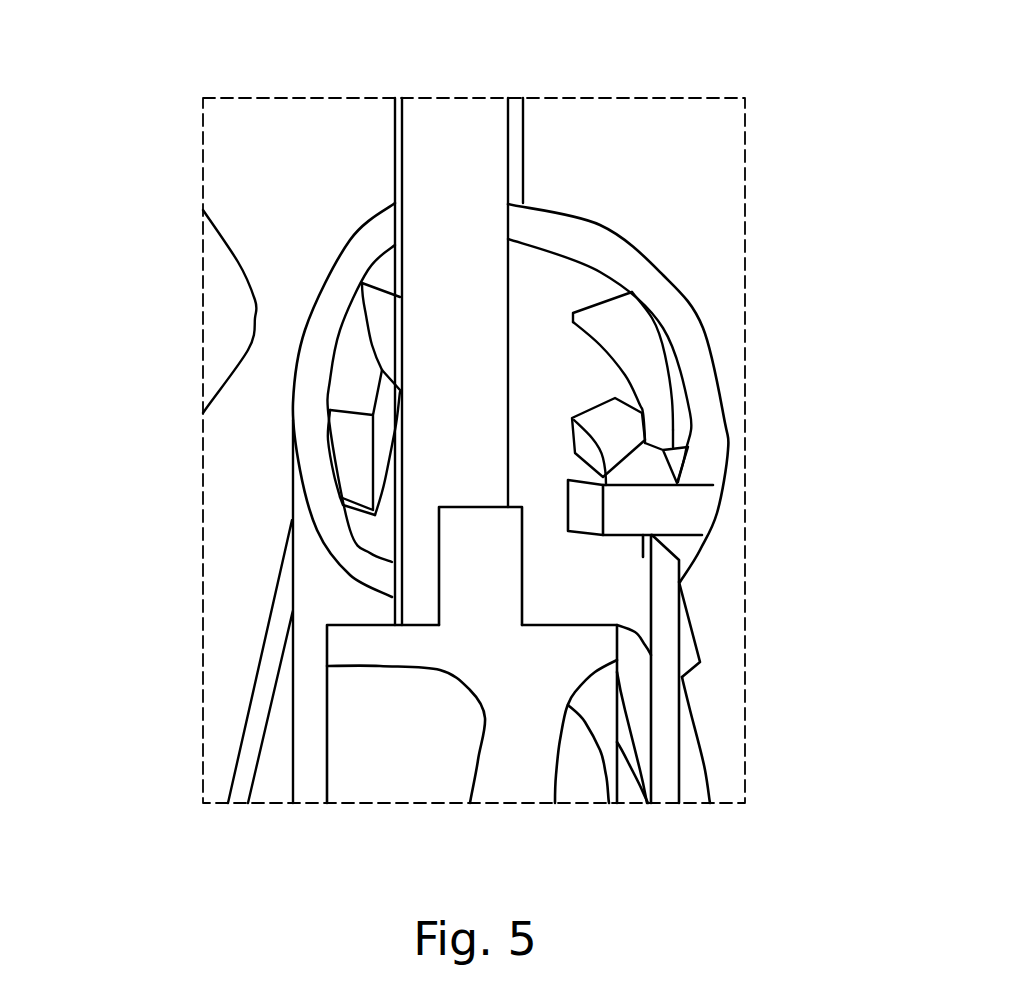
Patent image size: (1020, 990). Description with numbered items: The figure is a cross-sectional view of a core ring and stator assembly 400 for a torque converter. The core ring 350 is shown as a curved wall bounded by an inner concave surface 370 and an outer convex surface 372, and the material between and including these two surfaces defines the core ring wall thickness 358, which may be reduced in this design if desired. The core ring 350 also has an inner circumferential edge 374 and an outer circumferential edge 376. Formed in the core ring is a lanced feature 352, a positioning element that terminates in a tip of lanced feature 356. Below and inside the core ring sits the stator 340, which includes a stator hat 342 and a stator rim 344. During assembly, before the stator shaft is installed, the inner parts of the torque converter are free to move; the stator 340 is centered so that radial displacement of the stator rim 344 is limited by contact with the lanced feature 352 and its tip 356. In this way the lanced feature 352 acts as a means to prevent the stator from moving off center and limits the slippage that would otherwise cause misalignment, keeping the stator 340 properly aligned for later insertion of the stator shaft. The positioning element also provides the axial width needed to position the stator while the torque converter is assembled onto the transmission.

The core ring and stator assembly 400 is at (190, 125).
The outer circumferential edge 376 is at (503, 218).
The core ring 350 is at (628, 258).
The core ring wall thickness 358 is at (551, 252).
The inner concave surface 370 is at (602, 303).
The lanced feature 352 is at (603, 487).
The tip of lanced feature 356 is at (590, 520).
The outer convex surface 372 is at (696, 551).
The inner circumferential edge 374 is at (650, 560).
The stator hat 342 is at (462, 593).
The stator rim 344 is at (352, 648).
The stator 340 is at (562, 770).